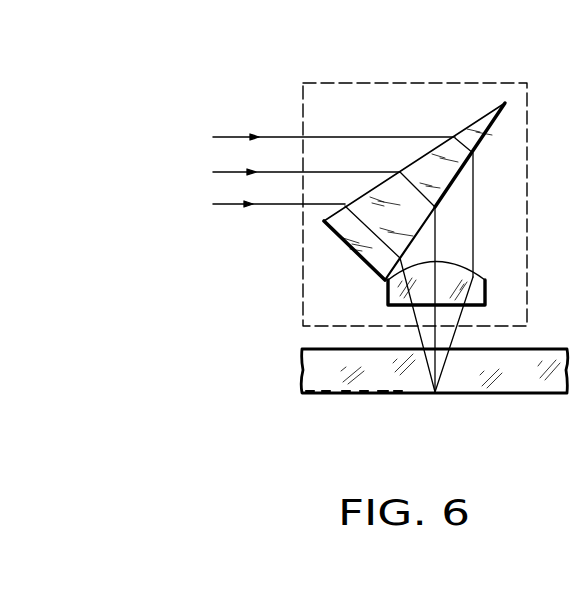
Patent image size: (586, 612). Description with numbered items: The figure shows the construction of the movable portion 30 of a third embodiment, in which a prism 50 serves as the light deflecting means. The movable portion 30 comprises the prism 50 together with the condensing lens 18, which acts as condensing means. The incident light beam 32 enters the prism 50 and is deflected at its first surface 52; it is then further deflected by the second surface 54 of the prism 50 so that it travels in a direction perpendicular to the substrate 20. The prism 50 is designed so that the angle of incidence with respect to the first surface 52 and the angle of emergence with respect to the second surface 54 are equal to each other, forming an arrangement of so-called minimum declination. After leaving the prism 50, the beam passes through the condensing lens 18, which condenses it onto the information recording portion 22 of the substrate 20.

The condensing lens 18 is at (488, 293).
The substrate 20 is at (550, 353).
The information recording portion 22 is at (352, 395).
The movable portion 30 is at (482, 83).
The incident light beam 32 is at (233, 137).
The prism 50 is at (490, 128).
The first surface 52 is at (465, 132).
The second surface 54 is at (478, 150).